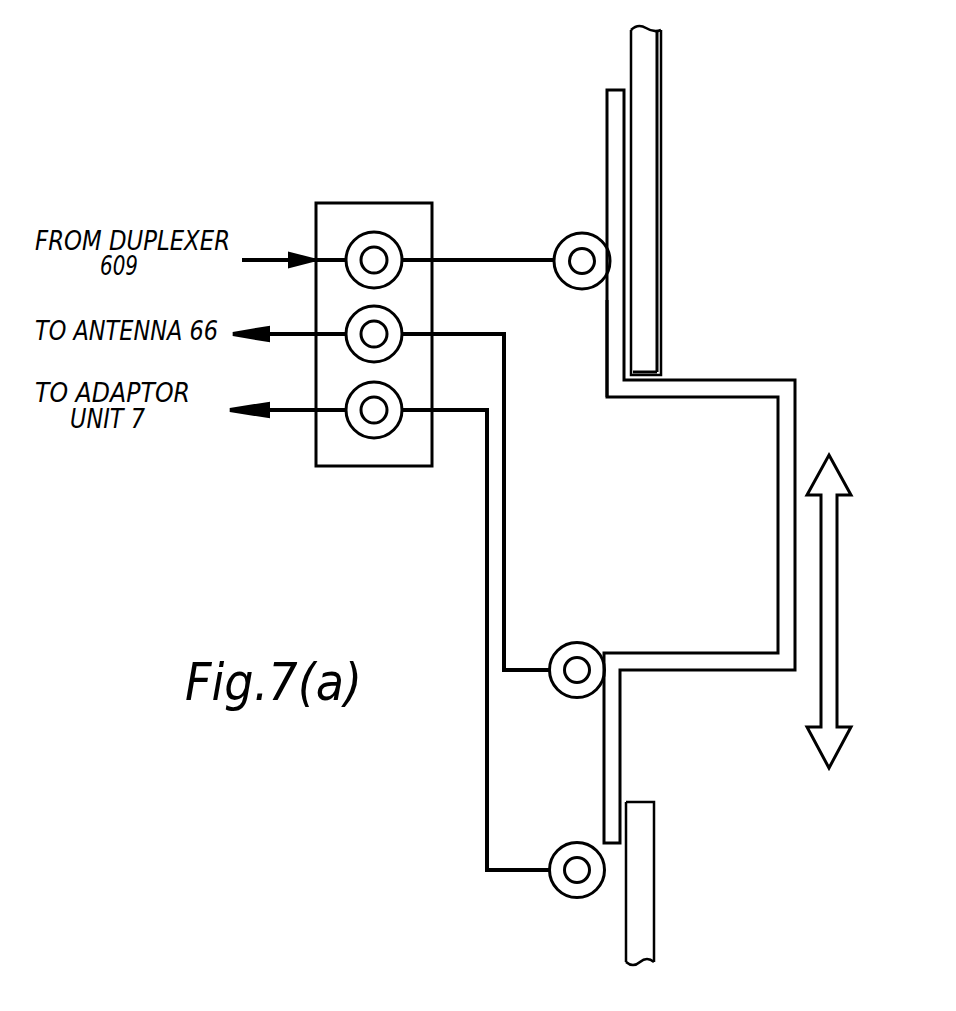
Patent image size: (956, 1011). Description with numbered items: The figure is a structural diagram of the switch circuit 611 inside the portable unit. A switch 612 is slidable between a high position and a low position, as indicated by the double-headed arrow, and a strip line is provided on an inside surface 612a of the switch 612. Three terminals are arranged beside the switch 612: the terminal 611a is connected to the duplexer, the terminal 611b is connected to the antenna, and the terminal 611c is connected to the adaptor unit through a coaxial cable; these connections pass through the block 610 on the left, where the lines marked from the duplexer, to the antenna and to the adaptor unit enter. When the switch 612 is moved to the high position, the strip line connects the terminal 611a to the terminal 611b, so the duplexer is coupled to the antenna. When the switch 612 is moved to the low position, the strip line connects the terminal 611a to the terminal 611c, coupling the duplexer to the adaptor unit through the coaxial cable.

The connector block 610 is at (385, 203).
The switch circuit 611 is at (755, 155).
The terminal 611a is at (568, 240).
The terminal 611b is at (566, 645).
The terminal 611c is at (562, 898).
The switch 612 is at (717, 380).
The inside surface 612a is at (607, 372).